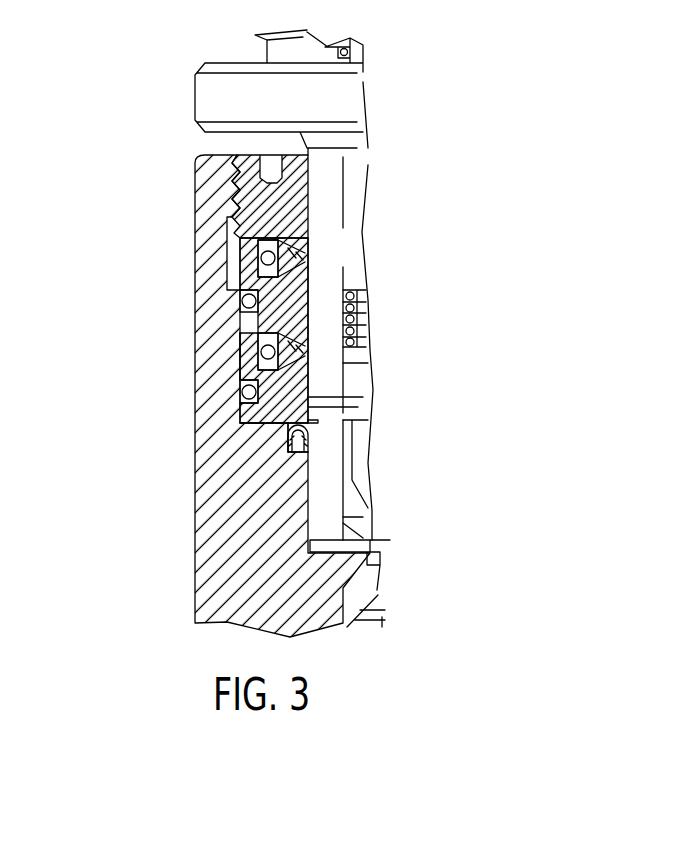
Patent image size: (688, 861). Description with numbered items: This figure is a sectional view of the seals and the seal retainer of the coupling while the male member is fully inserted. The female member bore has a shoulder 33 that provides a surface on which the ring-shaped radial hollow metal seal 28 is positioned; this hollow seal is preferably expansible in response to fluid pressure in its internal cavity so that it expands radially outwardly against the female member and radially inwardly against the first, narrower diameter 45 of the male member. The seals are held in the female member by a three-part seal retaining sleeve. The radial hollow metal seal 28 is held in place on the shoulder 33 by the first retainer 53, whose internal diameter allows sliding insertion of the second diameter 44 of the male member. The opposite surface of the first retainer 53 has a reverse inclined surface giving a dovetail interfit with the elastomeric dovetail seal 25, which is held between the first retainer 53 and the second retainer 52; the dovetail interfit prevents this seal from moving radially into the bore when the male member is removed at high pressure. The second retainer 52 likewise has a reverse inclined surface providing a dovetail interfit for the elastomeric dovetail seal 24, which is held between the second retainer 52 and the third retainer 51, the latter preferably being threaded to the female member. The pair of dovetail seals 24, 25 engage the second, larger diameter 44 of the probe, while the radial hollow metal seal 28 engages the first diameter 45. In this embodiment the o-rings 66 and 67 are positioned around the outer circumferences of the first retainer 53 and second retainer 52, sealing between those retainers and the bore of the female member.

The third retainer 51 is at (305, 202).
The elastomeric dovetail seal 24 is at (302, 256).
The second diameter 44 is at (305, 293).
The second retainer 52 is at (305, 317).
The elastomeric dovetail seal 25 is at (305, 355).
The first retainer 53 is at (305, 377).
The radial hollow metal seal 28 is at (302, 440).
The shoulder 33 is at (308, 453).
The first diameter 45 is at (308, 490).
The o-ring 66 is at (243, 392).
The o-ring 67 is at (243, 301).